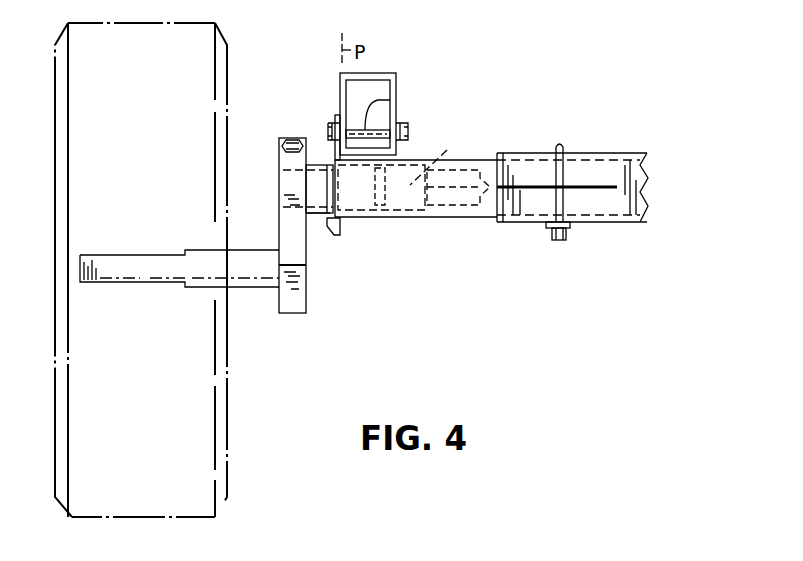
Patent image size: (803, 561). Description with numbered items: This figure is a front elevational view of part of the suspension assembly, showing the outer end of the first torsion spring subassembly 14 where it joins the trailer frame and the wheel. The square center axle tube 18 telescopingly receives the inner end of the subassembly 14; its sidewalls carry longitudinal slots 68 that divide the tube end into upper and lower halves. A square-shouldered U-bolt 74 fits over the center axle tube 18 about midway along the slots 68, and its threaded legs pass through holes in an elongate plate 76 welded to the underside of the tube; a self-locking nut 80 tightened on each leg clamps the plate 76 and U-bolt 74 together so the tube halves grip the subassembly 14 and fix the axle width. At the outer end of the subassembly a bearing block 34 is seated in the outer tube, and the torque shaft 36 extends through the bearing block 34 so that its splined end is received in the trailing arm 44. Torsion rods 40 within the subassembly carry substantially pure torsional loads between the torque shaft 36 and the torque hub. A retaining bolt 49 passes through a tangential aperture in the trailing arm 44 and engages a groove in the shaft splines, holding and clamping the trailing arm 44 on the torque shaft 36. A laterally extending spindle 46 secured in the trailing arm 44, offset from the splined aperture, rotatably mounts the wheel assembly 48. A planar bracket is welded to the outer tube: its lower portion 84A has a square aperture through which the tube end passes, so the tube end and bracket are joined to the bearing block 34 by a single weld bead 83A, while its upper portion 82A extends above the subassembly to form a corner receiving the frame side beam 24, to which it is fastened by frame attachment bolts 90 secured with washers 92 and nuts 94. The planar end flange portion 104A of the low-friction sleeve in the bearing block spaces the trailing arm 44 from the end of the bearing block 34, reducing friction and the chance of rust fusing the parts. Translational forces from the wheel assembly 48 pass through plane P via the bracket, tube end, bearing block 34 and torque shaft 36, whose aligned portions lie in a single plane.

The first torsion spring subassembly 14 is at (471, 160).
The center axle tube 18 is at (636, 228).
The frame side beam 24 is at (399, 108).
The bearing block 34 is at (318, 193).
The torque shaft 36 is at (442, 154).
The torsion rods 40 is at (461, 197).
The trailing arm 44 is at (299, 314).
The spindle 46 is at (163, 283).
The wheel assembly 48 is at (229, 404).
The retaining bolt 49 is at (291, 139).
The slots 68 is at (590, 183).
The U-bolt 74 is at (565, 148).
The elongate plate 76 is at (552, 227).
The self-locking nut 80 is at (566, 233).
The upper portion of bracket 82A is at (335, 125).
The weld bead 83A is at (339, 229).
The lower portion of bracket 84A is at (340, 222).
The frame attachment bolt 90 is at (385, 102).
The washer 92 is at (401, 126).
The nut 94 is at (397, 140).
The planar end flange portion of sleeve 104A is at (307, 214).